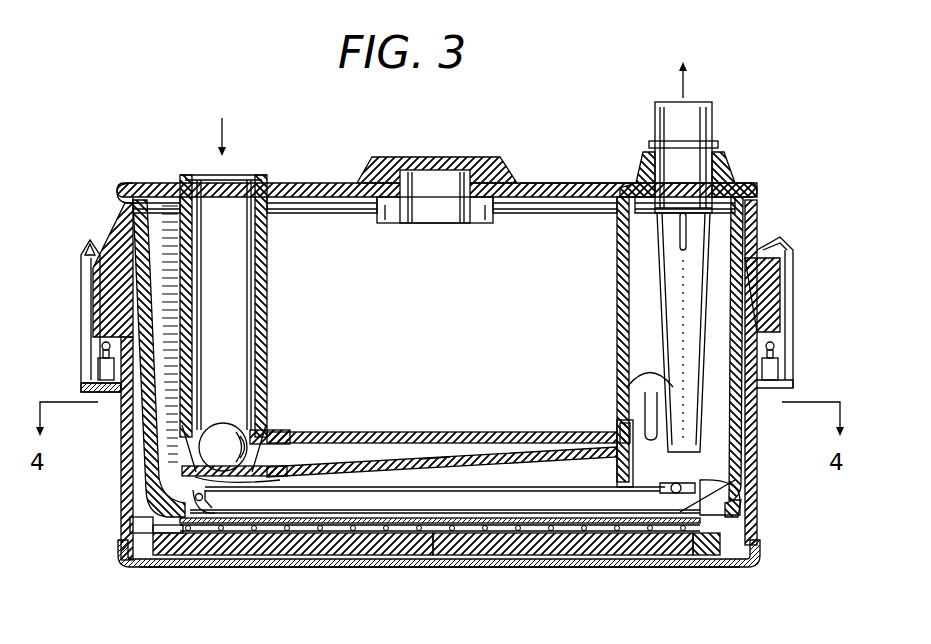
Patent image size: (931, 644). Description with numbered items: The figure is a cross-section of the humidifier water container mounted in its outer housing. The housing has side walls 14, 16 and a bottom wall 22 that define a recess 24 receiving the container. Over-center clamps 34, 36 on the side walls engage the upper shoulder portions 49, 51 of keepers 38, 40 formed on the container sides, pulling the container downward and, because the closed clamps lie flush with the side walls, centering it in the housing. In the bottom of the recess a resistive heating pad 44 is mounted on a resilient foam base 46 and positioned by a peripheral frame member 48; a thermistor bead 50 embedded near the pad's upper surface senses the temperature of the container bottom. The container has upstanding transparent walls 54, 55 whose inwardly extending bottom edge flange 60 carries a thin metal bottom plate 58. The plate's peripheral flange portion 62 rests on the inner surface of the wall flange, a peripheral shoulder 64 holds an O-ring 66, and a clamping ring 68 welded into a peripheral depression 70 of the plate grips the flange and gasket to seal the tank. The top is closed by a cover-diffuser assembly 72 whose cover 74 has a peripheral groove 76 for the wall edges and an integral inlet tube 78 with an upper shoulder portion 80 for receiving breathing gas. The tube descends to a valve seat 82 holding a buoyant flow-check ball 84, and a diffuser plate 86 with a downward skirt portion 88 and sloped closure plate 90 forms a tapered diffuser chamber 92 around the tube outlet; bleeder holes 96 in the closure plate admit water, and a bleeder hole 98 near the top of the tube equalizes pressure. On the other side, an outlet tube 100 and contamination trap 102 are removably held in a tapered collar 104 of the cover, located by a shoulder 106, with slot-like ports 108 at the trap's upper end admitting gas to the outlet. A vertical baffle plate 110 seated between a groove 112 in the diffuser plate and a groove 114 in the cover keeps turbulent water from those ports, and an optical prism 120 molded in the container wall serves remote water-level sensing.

The side wall 14 is at (125, 490).
The side wall 16 is at (758, 466).
The bottom wall 22 is at (627, 562).
The recess 24 is at (130, 525).
The clamp 34 is at (82, 327).
The clamp 36 is at (792, 253).
The keeper 38 is at (100, 285).
The keeper 40 is at (770, 318).
The resistive heating pad 44 is at (318, 536).
The resilient base 46 is at (432, 538).
The peripheral frame member 48 is at (128, 548).
The upper shoulder portion 49 is at (88, 262).
The thermistor bead 50 is at (555, 524).
The upper shoulder portion 51 is at (793, 283).
The side wall 54 is at (150, 460).
The side wall 55 is at (742, 436).
The bottom plate 58 is at (273, 530).
The bottom edge flange 60 is at (725, 505).
The peripheral flange portion 62 is at (700, 488).
The peripheral shoulder 64 is at (705, 540).
The O-ring 66 is at (662, 490).
The clamping ring 68 is at (185, 530).
The peripheral depression 70 is at (238, 512).
The cover-diffuser assembly 72 is at (535, 181).
The cover 74 is at (316, 184).
The peripheral groove 76 is at (140, 174).
The inlet tube 78 is at (268, 310).
The upper shoulder portion 80 is at (186, 178).
The valve seat 82 is at (268, 436).
The flow-check ball 84 is at (223, 424).
The diffuser plate 86 is at (494, 432).
The skirt portion 88 is at (614, 445).
The closure plate 90 is at (388, 467).
The diffuser chamber 92 is at (440, 456).
The bleeder holes 96 is at (266, 470).
The bleeder hole 98 is at (190, 252).
The outlet tube 100 is at (714, 112).
The contamination trap 102 is at (662, 300).
The collar 104 is at (722, 170).
The shoulder 106 is at (652, 143).
The slot-like ports 108 is at (690, 235).
The vertical baffle plate 110 is at (617, 274).
The groove 112 is at (628, 382).
The groove 114 is at (396, 172).
The optical prism 120 is at (656, 392).